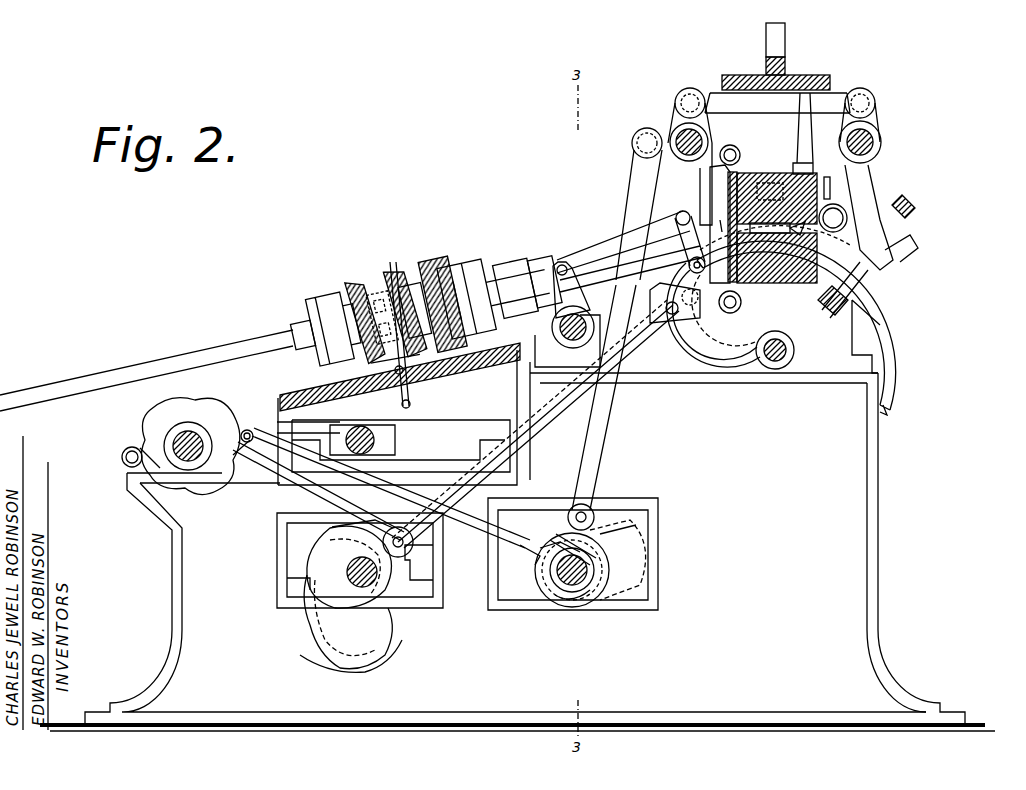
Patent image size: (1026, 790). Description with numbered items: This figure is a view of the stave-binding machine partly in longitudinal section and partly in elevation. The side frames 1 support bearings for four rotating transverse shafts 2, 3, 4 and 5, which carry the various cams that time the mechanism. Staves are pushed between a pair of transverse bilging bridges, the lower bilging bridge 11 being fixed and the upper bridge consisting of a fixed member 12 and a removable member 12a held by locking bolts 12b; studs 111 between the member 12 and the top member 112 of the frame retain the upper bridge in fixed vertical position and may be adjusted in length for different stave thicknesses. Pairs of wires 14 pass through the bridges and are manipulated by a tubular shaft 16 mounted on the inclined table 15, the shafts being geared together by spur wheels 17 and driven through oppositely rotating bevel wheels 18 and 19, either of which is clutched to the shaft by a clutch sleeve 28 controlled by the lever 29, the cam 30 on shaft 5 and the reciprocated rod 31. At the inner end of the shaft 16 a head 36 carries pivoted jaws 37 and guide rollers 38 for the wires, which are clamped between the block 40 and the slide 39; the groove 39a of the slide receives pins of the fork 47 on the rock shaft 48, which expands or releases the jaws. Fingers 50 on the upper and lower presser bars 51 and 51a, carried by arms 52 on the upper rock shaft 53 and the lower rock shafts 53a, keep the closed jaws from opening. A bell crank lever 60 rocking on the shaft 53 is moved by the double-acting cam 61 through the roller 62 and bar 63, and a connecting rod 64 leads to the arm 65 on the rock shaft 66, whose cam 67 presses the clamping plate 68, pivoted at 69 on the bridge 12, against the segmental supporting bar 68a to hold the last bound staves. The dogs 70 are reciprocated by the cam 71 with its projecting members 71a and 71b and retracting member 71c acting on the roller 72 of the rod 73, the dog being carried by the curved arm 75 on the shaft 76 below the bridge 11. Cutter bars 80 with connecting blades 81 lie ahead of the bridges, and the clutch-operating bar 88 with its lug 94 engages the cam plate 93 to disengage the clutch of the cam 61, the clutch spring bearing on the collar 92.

The side frames 1 is at (517, 540).
The transverse shaft 2 is at (366, 446).
The transverse shaft 3 is at (380, 577).
The transverse shaft 4 is at (566, 584).
The transverse shaft 5 is at (190, 438).
The lower bilging bridge 11 is at (775, 275).
The upper bilging bridge member 12 is at (820, 198).
The removable upper bridge member 12a is at (777, 187).
The locking bolts 12b is at (818, 175).
The wires 14 is at (55, 408).
The table 15 is at (505, 370).
The tubular shaft 16 is at (454, 294).
The spur wheels 17 is at (458, 294).
The bevel wheel 18 is at (405, 303).
The bevel wheel 19 is at (363, 312).
The clutch sleeve 28 is at (381, 306).
The lever 29 is at (406, 361).
The cam 30 is at (195, 446).
The reciprocated rod 31 is at (408, 397).
The head 36 is at (690, 241).
The jaws 37 is at (719, 220).
The guide rollers 38 is at (623, 242).
The slide 39 is at (538, 272).
The groove 39a is at (566, 252).
The block 40 is at (516, 291).
The fork 47 is at (580, 285).
The rock shaft 48 is at (562, 334).
The fingers 50 is at (725, 220).
The upper presser bar 51 is at (712, 185).
The lower presser bar 51a is at (713, 315).
The arms 52 is at (734, 146).
The upper rock shaft 53 is at (632, 144).
The lower rock shafts 53a is at (670, 318).
The bell crank lever 60 is at (676, 112).
The double-acting cam 61 is at (590, 540).
The roller 62 is at (595, 512).
The bar 63 is at (603, 440).
The connecting rod 64 is at (777, 103).
The arm 65 is at (882, 115).
The rock shaft 66 is at (890, 147).
The cam 67 is at (902, 238).
The clamping plate 68 is at (900, 268).
The segmental supporting bar 68a is at (880, 315).
The pivot 69 is at (833, 218).
The dog 70 is at (690, 250).
The double-acting cam 71 is at (350, 580).
The projecting member 71a is at (357, 536).
The projecting member 71b is at (330, 628).
The retracting member 71c is at (352, 670).
The roller 72 is at (405, 550).
The rod 73 is at (545, 422).
The curved arm 75 is at (718, 342).
The shaft 76 is at (793, 352).
The cutter bars 80 is at (898, 208).
The connecting blades 81 is at (920, 215).
The clutch-operating bar 88 is at (268, 472).
The collar 92 is at (590, 590).
The cam plate 93 is at (575, 545).
The lug 94 is at (548, 545).
The studs 111 is at (803, 128).
The top member 112 is at (808, 78).